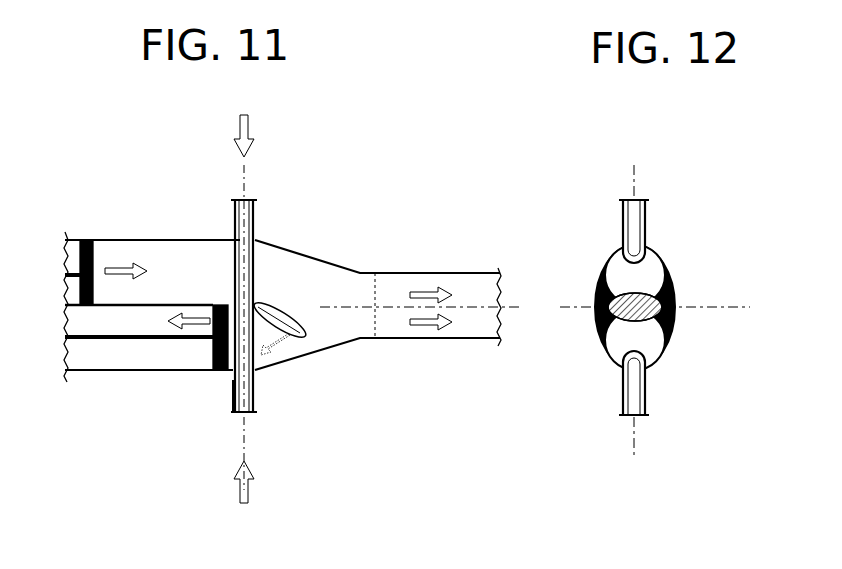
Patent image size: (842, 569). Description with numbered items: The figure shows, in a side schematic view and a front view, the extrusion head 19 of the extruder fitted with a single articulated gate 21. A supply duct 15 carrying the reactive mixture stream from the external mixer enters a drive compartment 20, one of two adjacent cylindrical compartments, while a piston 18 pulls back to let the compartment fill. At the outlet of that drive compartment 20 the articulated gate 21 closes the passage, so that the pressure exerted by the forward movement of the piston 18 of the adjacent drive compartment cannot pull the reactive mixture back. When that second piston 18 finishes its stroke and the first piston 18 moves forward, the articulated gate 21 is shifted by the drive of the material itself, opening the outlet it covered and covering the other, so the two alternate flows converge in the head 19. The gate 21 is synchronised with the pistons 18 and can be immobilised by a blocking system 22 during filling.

In FIG. 11, the supply duct 15 is at (252, 207).
In FIG. 12, the supply duct 15 is at (648, 207).
In FIG. 11, the piston 18 is at (88, 240).
In FIG. 12, the piston 18 is at (645, 272).
In FIG. 11, the extrusion head 19 is at (340, 213).
In FIG. 12, the extrusion head 19 is at (592, 207).
In FIG. 11, the drive compartment 20 is at (173, 260).
In FIG. 12, the drive compartment 20 is at (655, 250).
In FIG. 11, the articulated gate 21 is at (303, 336).
In FIG. 12, the articulated gate 21 is at (662, 328).
In FIG. 11, the blocking system 22 is at (255, 368).
In FIG. 12, the blocking system 22 is at (640, 360).